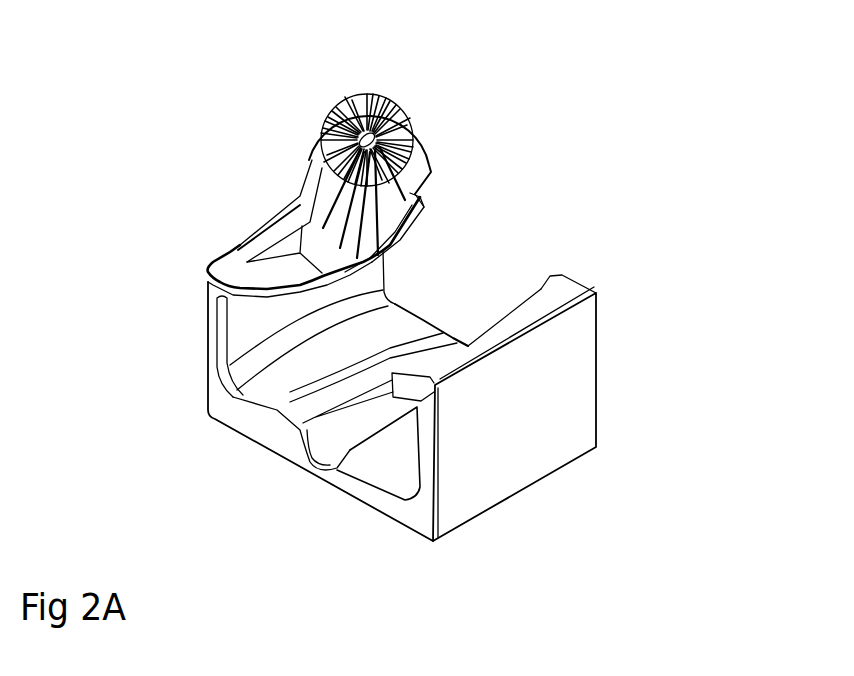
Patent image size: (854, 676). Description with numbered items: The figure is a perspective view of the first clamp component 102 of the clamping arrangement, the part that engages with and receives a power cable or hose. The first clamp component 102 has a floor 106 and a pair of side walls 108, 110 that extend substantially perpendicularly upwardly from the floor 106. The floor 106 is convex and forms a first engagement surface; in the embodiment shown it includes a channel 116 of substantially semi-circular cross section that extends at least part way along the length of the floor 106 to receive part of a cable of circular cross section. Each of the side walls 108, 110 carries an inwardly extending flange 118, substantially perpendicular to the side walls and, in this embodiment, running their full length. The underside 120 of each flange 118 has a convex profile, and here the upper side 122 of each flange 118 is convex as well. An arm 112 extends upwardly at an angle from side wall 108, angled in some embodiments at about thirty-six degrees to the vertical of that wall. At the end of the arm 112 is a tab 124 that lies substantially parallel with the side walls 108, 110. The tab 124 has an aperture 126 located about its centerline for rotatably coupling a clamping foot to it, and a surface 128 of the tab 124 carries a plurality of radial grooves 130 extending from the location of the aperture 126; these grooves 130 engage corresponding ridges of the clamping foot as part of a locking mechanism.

The first clamp component 102 is at (624, 96).
The floor 106 is at (290, 397).
The side wall 108 is at (208, 328).
The side wall 110 is at (516, 461).
The arm 112 is at (272, 222).
The channel 116 is at (333, 438).
The flange 118 is at (412, 204).
The underside of flange 120 is at (400, 233).
The upper side of flange 122 is at (265, 283).
The tab 124 is at (366, 88).
The aperture 126 is at (416, 116).
The surface of tab 128 is at (420, 165).
The radial grooves 130 is at (331, 151).